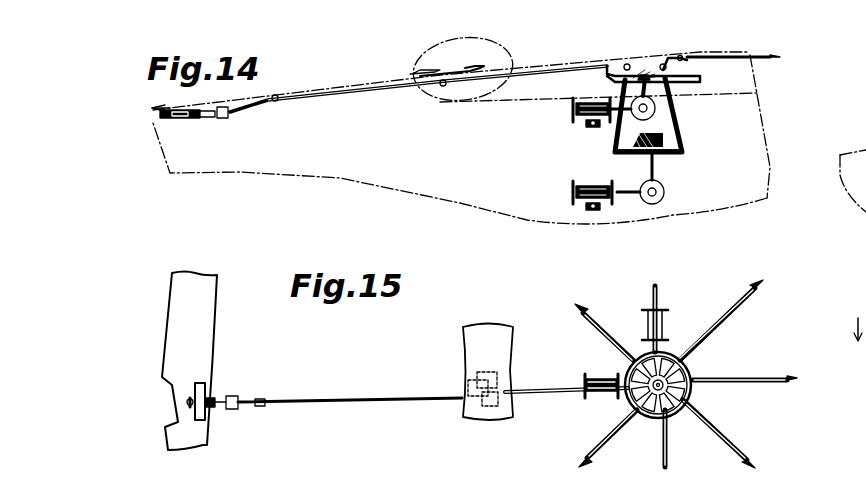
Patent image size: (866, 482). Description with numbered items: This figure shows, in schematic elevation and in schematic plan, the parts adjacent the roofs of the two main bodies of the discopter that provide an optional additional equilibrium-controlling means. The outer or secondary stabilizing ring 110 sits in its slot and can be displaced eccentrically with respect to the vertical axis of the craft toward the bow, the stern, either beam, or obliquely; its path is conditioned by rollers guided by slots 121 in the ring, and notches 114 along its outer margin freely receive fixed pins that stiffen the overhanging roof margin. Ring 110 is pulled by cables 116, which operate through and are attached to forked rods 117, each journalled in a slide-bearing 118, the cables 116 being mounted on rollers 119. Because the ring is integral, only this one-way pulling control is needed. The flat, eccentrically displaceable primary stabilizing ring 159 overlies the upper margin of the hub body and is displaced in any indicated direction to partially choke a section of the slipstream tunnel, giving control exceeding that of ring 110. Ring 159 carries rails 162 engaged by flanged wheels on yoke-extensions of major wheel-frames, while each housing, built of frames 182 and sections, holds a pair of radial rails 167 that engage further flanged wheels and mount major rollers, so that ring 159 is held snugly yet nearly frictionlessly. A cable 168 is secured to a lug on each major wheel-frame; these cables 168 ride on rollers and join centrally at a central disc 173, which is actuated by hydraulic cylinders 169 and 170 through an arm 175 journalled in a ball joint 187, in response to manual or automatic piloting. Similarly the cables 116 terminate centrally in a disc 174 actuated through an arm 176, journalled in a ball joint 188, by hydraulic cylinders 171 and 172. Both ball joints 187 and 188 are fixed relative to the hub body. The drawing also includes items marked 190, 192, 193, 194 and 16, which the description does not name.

In FIG. 14, the outer stabilizing ring 110 is at (153, 111).
In FIG. 15, the outer stabilizing ring 110 is at (173, 328).
In FIG. 15, the notches 114 is at (168, 405).
In FIG. 14, the cables 116 is at (332, 93).
In FIG. 15, the cables 116 is at (356, 404).
In FIG. 14, the forked rods 117 is at (196, 119).
In FIG. 15, the forked rods 117 is at (212, 398).
In FIG. 14, the slide-bearing 118 is at (224, 118).
In FIG. 15, the slide-bearing 118 is at (233, 396).
In FIG. 14, the rollers 119 is at (276, 101).
In FIG. 15, the rollers 119 is at (262, 399).
In FIG. 15, the slots 121 is at (207, 388).
In FIG. 14, the primary stabilizing ring 159 is at (447, 60).
In FIG. 15, the primary stabilizing ring 159 is at (470, 340).
In FIG. 15, the rails 162 is at (480, 375).
In FIG. 15, the rails 167 is at (480, 395).
In FIG. 14, the cables 168 is at (548, 64).
In FIG. 15, the cables 168 is at (547, 395).
In FIG. 14, the hydraulic cylinder 169 is at (585, 126).
In FIG. 15, the hydraulic cylinder 169 is at (590, 400).
In FIG. 14, the hydraulic cylinder 170 is at (665, 112).
In FIG. 15, the hydraulic cylinder 170 is at (668, 325).
In FIG. 14, the hydraulic cylinder 171 is at (576, 208).
In FIG. 15, the hydraulic cylinder 171 is at (612, 395).
In FIG. 14, the hydraulic cylinder 172 is at (665, 198).
In FIG. 15, the hydraulic cylinder 172 is at (667, 326).
In FIG. 14, the central disc 173 is at (672, 58).
In FIG. 14, the disc 174 is at (670, 162).
In FIG. 15, the disc 174 is at (700, 377).
In FIG. 14, the arm 175 is at (638, 76).
In FIG. 14, the arm 176 is at (640, 172).
In FIG. 15, the frames 182 is at (470, 385).
In FIG. 14, the ball joint 187 is at (630, 62).
In FIG. 14, the ball joint 188 is at (675, 130).
In FIG. 14, the pin 190 is at (645, 62).
In FIG. 14, the cylinder 192 is at (575, 125).
In FIG. 14, the cylinder 193 is at (591, 212).
In FIG. 14, the frame 194 is at (690, 135).
In FIG. 14, the detail area 16 is at (412, 95).